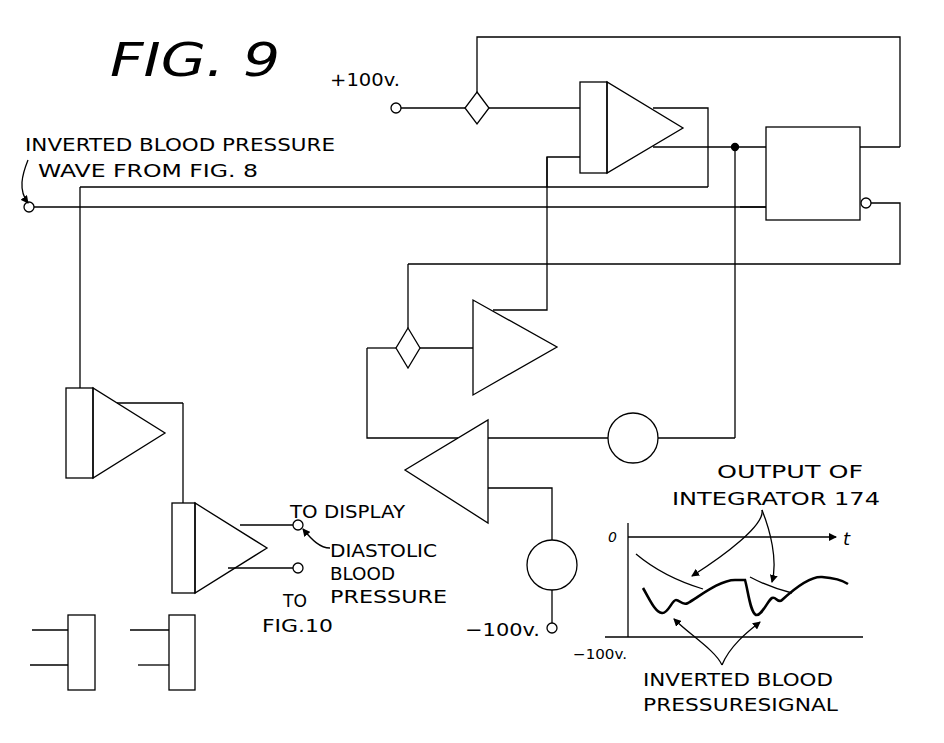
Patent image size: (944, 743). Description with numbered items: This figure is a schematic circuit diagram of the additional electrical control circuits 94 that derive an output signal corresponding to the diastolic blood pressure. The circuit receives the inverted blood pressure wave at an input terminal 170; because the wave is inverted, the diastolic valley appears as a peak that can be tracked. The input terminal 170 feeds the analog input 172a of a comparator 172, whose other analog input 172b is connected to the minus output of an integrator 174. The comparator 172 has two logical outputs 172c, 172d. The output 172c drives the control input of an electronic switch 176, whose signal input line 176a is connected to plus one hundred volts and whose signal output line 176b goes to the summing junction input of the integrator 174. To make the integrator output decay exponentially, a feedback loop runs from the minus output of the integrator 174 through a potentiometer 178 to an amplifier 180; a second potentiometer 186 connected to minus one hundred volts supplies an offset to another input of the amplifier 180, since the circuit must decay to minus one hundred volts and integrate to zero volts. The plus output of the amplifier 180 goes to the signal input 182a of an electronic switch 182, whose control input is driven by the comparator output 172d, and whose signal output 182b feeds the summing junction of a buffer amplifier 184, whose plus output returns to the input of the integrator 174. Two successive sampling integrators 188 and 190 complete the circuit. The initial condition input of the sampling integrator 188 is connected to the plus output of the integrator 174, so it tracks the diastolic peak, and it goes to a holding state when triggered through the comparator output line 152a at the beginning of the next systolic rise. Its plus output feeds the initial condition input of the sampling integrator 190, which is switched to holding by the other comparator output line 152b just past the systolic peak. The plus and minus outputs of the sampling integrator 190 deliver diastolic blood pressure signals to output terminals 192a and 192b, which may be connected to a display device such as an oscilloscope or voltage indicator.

The electrical control circuits 94 is at (428, 66).
The input terminal 170 is at (29, 213).
The integrator 174 is at (601, 82).
The electronic switch 176 is at (484, 128).
The signal input line 176a is at (418, 113).
The signal output line 176b is at (560, 112).
The comparator 172 is at (815, 127).
The analog input 172a is at (752, 210).
The analog input 172b is at (746, 140).
The logical output 172c is at (864, 152).
The logical output 172d is at (888, 192).
The electronic switch 182 is at (408, 368).
The signal input 182a is at (399, 342).
The signal output 182b is at (437, 360).
The buffer amplifier 184 is at (518, 368).
The amplifier 180 is at (492, 428).
The potentiometer 178 is at (742, 410).
The potentiometer 186 is at (527, 565).
The sampling integrator 188 is at (107, 396).
The sampling integrator 190 is at (188, 502).
The output terminal 192a is at (292, 522).
The output terminal 192b is at (294, 572).
The comparator output line 152a is at (44, 628).
The comparator output line 152b is at (146, 628).